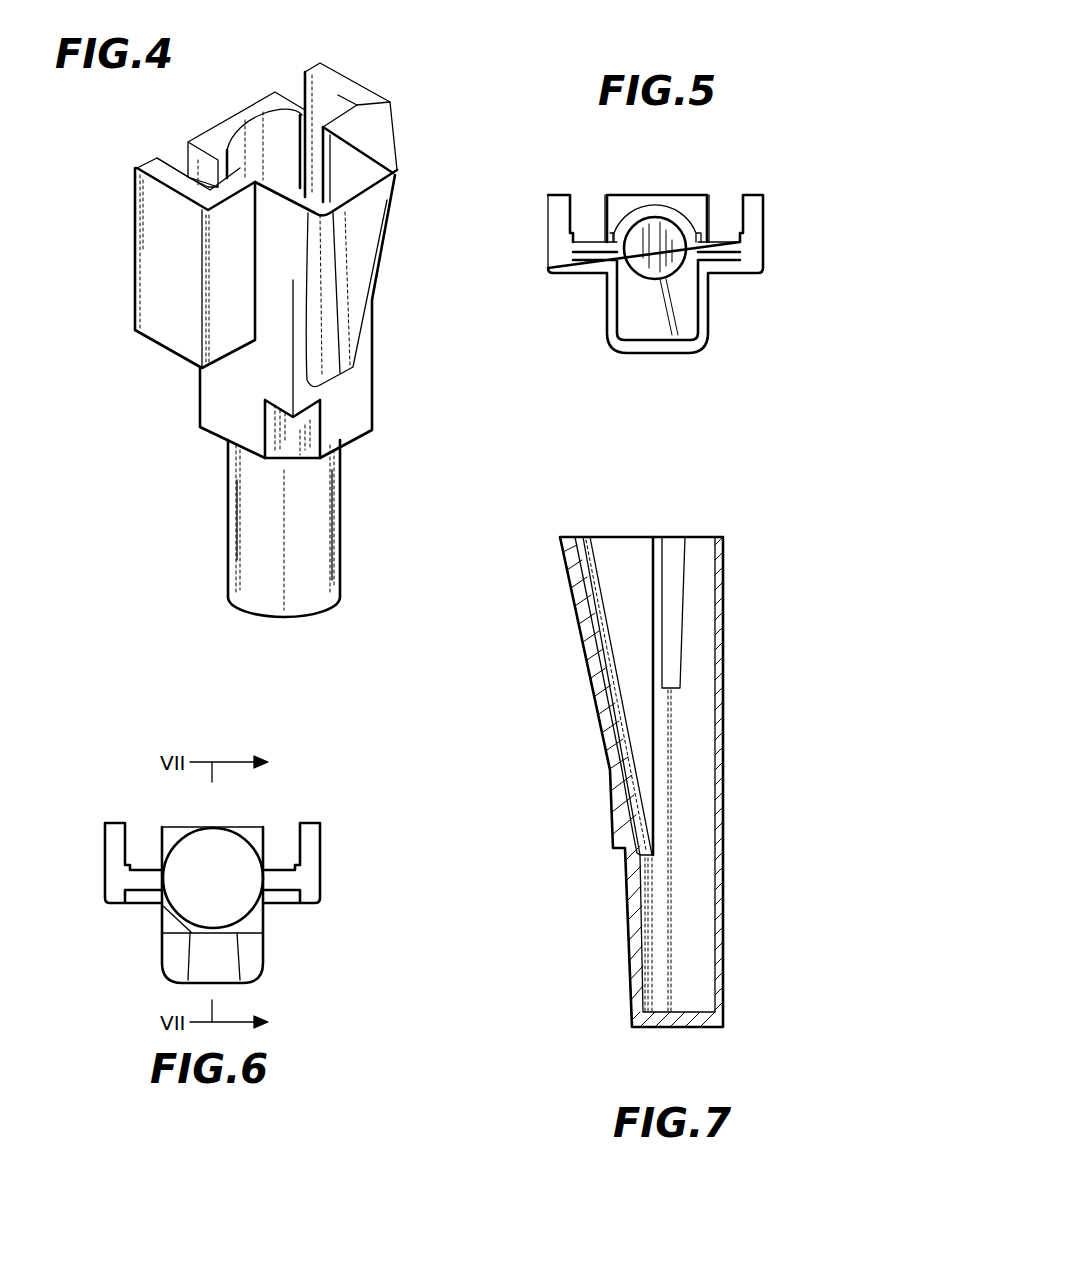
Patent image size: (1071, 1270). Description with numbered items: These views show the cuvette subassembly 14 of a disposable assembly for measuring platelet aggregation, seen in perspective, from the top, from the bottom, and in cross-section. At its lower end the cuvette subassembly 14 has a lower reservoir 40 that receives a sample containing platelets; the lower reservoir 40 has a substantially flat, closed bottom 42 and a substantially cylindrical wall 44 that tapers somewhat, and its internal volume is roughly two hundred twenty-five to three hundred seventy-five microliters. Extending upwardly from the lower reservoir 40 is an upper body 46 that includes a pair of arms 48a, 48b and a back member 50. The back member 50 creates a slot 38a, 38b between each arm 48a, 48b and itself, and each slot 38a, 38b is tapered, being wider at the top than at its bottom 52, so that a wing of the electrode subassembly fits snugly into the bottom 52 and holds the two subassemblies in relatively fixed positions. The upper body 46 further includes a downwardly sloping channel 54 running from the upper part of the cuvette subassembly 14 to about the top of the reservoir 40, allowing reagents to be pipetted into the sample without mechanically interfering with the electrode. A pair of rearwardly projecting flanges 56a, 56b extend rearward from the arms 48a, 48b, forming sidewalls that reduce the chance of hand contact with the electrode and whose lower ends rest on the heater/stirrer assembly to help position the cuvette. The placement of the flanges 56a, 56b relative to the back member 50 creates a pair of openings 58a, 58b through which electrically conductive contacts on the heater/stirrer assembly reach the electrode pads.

In FIG. 4, the cuvette subassembly 14 is at (412, 108).
In FIG. 5, the cuvette subassembly 14 is at (752, 155).
In FIG. 6, the cuvette subassembly 14 is at (278, 794).
In FIG. 7, the cuvette subassembly 14 is at (760, 680).
In FIG. 4, the slot 38a is at (315, 125).
In FIG. 5, the slot 38a is at (720, 237).
In FIG. 4, the slot 38b is at (187, 163).
In FIG. 5, the slot 38b is at (597, 237).
In FIG. 7, the slot 38b is at (672, 545).
In FIG. 4, the lower reservoir 40 is at (327, 527).
In FIG. 7, the lower reservoir 40 is at (697, 948).
In FIG. 4, the closed bottom 42 is at (280, 618).
In FIG. 5, the closed bottom 42 is at (655, 276).
In FIG. 6, the closed bottom 42 is at (231, 893).
In FIG. 7, the closed bottom 42 is at (675, 1027).
In FIG. 4, the cylindrical wall 44 is at (340, 472).
In FIG. 7, the cylindrical wall 44 is at (628, 927).
In FIG. 4, the upper body 46 is at (127, 170).
In FIG. 7, the upper body 46 is at (550, 537).
In FIG. 4, the arm 48a is at (377, 133).
In FIG. 5, the arm 48a is at (728, 277).
In FIG. 6, the arm 48a is at (142, 905).
In FIG. 4, the arm 48b is at (227, 330).
In FIG. 5, the arm 48b is at (578, 277).
In FIG. 6, the arm 48b is at (287, 905).
In FIG. 4, the back member 50 is at (262, 110).
In FIG. 5, the back member 50 is at (638, 193).
In FIG. 7, the back member 50 is at (721, 568).
In FIG. 7, the bottom of slot 52 is at (670, 693).
In FIG. 4, the downwardly sloping channel 54 is at (362, 228).
In FIG. 5, the downwardly sloping channel 54 is at (647, 357).
In FIG. 7, the downwardly sloping channel 54 is at (587, 567).
In FIG. 4, the rearwardly projecting flange 56a is at (357, 85).
In FIG. 5, the rearwardly projecting flange 56a is at (775, 242).
In FIG. 6, the rearwardly projecting flange 56a is at (100, 882).
In FIG. 4, the rearwardly projecting flange 56b is at (160, 168).
In FIG. 5, the rearwardly projecting flange 56b is at (538, 242).
In FIG. 6, the rearwardly projecting flange 56b is at (320, 870).
In FIG. 4, the opening 58a is at (297, 85).
In FIG. 5, the opening 58a is at (723, 195).
In FIG. 6, the opening 58a is at (145, 822).
In FIG. 4, the opening 58b is at (172, 150).
In FIG. 5, the opening 58b is at (587, 195).
In FIG. 6, the opening 58b is at (282, 823).